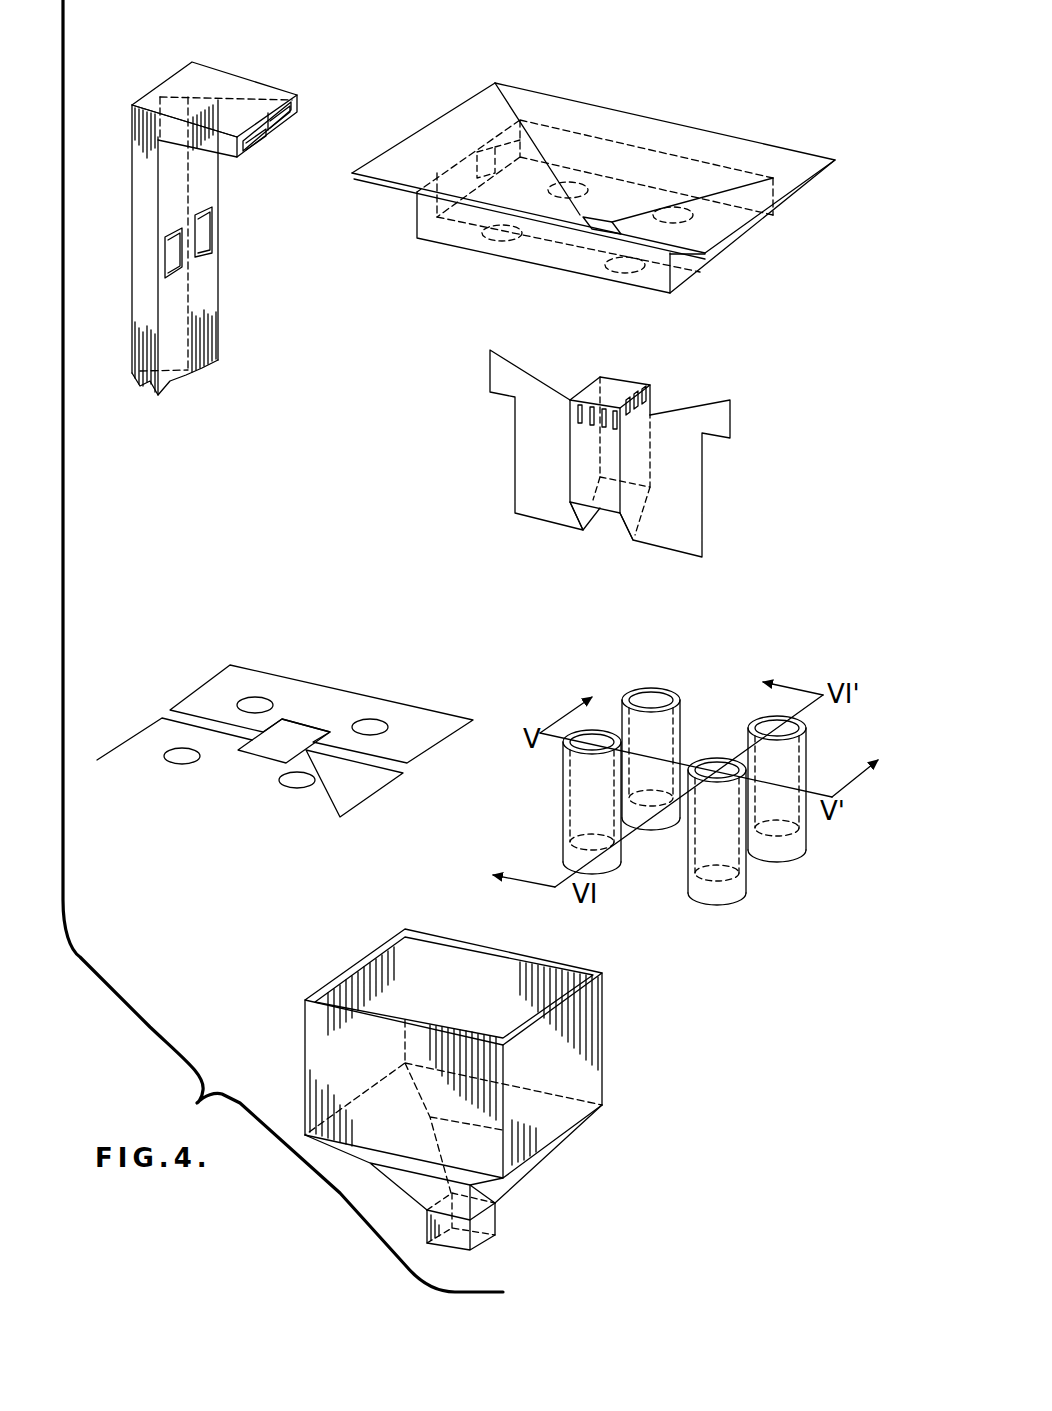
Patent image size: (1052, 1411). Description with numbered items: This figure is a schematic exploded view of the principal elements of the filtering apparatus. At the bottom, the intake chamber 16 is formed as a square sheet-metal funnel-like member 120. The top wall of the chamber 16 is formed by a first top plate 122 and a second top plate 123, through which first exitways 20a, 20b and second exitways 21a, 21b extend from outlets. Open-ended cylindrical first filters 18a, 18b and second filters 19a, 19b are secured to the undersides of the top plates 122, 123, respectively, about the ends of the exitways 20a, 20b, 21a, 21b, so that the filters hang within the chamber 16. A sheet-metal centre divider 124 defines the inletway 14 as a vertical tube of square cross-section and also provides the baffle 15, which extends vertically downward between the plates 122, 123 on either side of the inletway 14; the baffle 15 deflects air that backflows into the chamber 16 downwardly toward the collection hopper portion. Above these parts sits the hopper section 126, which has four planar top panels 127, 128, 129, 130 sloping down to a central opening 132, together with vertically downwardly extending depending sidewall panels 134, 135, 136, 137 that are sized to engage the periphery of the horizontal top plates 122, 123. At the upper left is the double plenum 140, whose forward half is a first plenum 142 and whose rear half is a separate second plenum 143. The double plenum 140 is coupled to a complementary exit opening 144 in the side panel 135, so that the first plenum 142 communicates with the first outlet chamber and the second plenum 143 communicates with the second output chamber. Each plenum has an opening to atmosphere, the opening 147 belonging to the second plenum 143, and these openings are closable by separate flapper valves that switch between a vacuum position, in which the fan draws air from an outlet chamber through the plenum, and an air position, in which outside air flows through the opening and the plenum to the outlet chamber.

The double plenum 140 is at (165, 60).
The first plenum 142 is at (252, 137).
The second plenum 143 is at (300, 107).
The opening 147 is at (203, 235).
The hopper section 126 is at (610, 170).
The top panel 127 is at (415, 195).
The top panel 128 is at (460, 118).
The top panel 129 is at (750, 153).
The top panel 130 is at (787, 187).
The central opening 132 is at (608, 222).
The sidewall panel 134 is at (560, 258).
The sidewall panel 135 is at (512, 135).
The sidewall panel 136 is at (662, 163).
The sidewall panel 137 is at (697, 267).
The exit opening 144 is at (458, 187).
The centre divider 124 is at (640, 463).
The baffle 15 is at (527, 450).
The inletway 14 is at (613, 495).
The first top plate 122 is at (237, 785).
The second top plate 123 is at (342, 698).
The first exitway 20a is at (180, 758).
The first exitway 20b is at (297, 783).
The second exitway 21a is at (257, 703).
The second exitway 21b is at (377, 727).
The first filter 18a is at (563, 792).
The first filter 18b is at (732, 895).
The second filter 19a is at (650, 686).
The second filter 19b is at (792, 850).
The intake chamber 16 is at (499, 997).
The funnel-like member 120 is at (509, 1089).